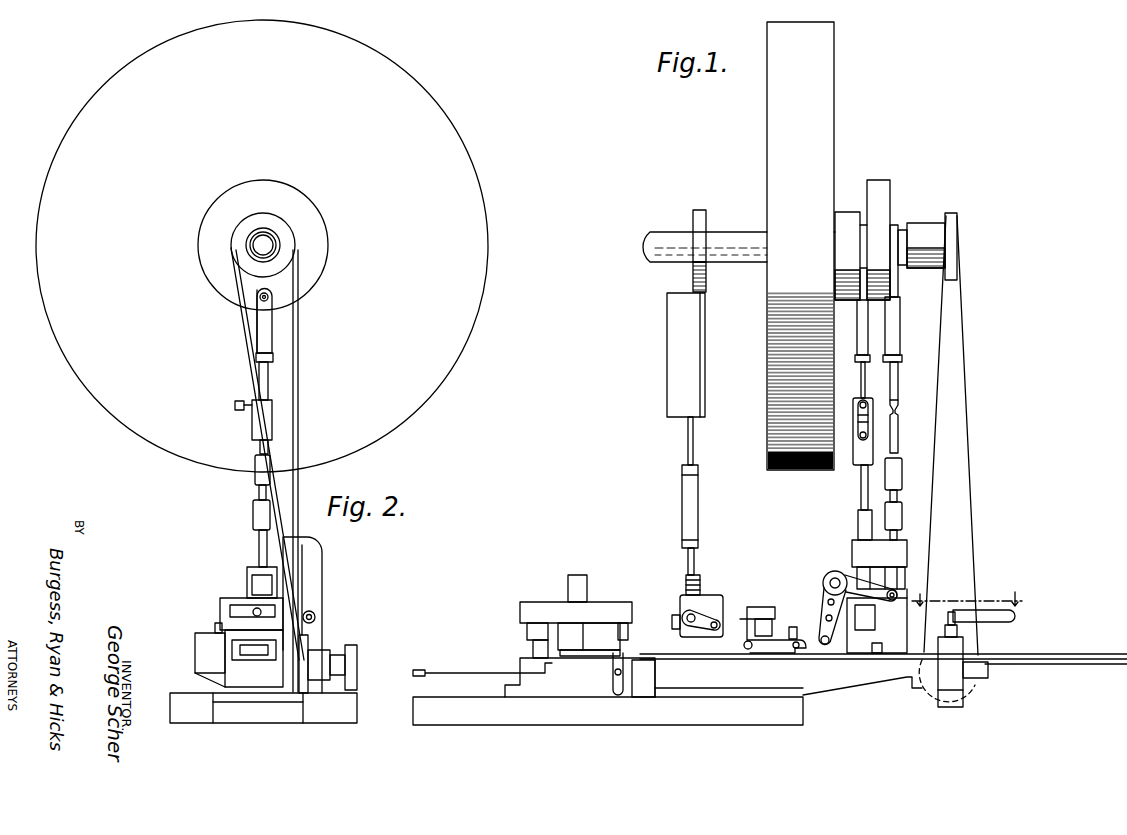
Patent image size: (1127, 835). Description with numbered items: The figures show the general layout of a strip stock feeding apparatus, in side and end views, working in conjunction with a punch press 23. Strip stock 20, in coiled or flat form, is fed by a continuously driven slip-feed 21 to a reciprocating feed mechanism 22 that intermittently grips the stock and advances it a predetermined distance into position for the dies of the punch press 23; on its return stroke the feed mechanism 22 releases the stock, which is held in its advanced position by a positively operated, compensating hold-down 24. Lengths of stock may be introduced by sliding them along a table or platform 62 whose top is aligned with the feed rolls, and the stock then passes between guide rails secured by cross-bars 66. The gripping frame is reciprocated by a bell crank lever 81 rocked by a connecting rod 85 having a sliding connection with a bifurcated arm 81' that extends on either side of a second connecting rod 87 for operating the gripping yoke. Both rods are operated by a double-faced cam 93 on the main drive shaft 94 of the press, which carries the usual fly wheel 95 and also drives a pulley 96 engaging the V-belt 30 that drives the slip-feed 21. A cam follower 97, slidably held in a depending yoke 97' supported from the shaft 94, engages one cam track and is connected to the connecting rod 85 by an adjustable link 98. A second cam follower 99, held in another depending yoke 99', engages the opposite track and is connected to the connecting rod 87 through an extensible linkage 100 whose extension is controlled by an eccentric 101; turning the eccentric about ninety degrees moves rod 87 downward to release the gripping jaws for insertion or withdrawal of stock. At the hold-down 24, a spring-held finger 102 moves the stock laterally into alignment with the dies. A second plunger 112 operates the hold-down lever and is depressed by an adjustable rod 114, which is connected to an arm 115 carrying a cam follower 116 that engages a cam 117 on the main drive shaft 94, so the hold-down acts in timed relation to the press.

In FIG. 1, the strip stock 20 is at (640, 655).
In FIG. 1, the slip-feed 21 is at (988, 596).
In FIG. 1, the reciprocating feed mechanism 22 is at (777, 594).
In FIG. 1, the punch press 23 is at (603, 594).
In FIG. 1, the compensating hold-down 24 is at (713, 592).
In FIG. 2, the V-belt 30 is at (297, 428).
In FIG. 1, the V-belt 30 is at (960, 372).
In FIG. 1, the table or platform 62 is at (1053, 663).
In FIG. 1, the cross-bars 66 is at (880, 653).
In FIG. 1, the bell crank lever 81 is at (817, 608).
In FIG. 1, the arm of the bell crank lever 81' is at (876, 602).
In FIG. 2, the connecting rod 85 is at (258, 470).
In FIG. 1, the connecting rod 85 is at (898, 470).
In FIG. 1, the connecting rod 87 is at (858, 500).
In FIG. 2, the double-faced cam 93 is at (300, 178).
In FIG. 1, the double-faced cam 93 is at (878, 180).
In FIG. 1, the main drive shaft 94 is at (655, 242).
In FIG. 2, the fly wheel 95 is at (210, 455).
In FIG. 1, the fly wheel 95 is at (815, 93).
In FIG. 2, the pulley 96 is at (292, 230).
In FIG. 1, the pulley 96 is at (950, 212).
In FIG. 2, the cam follower 97 is at (238, 372).
In FIG. 1, the cam follower 97 is at (907, 348).
In FIG. 2, the depending yoke 97' is at (225, 321).
In FIG. 1, the depending yoke 97' is at (917, 260).
In FIG. 1, the adjustable link 98 is at (898, 435).
In FIG. 1, the cam follower 99 is at (852, 349).
In FIG. 1, the depending yoke 99' is at (848, 256).
In FIG. 1, the extensible linkage 100 is at (865, 396).
In FIG. 1, the eccentric 101 is at (860, 430).
In FIG. 1, the spring-held finger 102 is at (613, 683).
In FIG. 1, the second plunger 112 is at (686, 578).
In FIG. 1, the adjustable rod 114 is at (687, 518).
In FIG. 1, the arm 115 is at (688, 432).
In FIG. 1, the cam follower 116 is at (707, 282).
In FIG. 1, the cam 117 is at (708, 222).